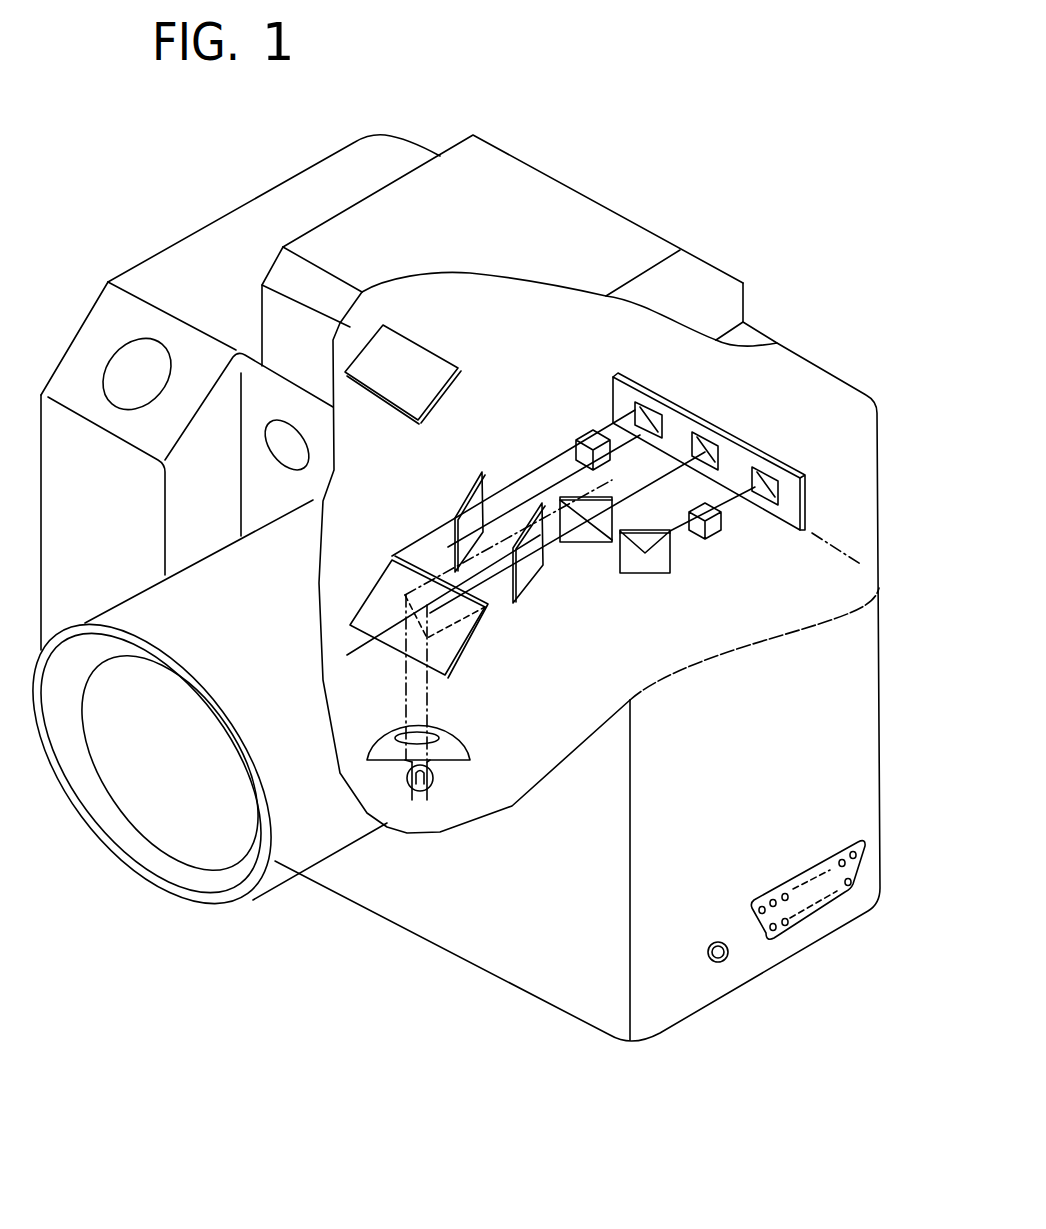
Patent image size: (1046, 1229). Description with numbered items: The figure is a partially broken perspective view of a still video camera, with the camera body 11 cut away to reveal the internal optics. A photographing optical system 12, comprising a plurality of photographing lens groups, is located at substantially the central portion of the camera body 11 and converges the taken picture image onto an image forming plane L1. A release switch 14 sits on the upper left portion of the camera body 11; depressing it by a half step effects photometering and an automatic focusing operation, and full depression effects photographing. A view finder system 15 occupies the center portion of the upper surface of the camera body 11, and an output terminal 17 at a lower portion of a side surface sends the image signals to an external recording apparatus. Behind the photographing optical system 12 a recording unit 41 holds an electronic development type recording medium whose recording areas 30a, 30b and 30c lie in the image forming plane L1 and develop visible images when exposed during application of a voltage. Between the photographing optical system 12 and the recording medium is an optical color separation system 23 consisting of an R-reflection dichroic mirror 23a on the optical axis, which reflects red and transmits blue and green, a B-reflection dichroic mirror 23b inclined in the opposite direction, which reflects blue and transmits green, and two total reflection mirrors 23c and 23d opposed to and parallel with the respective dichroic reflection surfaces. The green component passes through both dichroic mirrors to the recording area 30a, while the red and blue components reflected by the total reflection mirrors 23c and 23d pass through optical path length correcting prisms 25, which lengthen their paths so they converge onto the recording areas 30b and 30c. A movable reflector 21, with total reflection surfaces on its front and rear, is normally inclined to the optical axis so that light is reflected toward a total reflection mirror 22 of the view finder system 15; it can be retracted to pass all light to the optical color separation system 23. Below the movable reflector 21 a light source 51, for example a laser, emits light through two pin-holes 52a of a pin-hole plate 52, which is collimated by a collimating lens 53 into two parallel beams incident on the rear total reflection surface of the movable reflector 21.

The camera body 11 is at (488, 978).
The photographing optical system 12 is at (195, 843).
The release switch 14 is at (127, 373).
The view finder system 15 is at (425, 182).
The output terminal 17 is at (842, 895).
The movable reflector 21 is at (372, 592).
The total reflection mirror 22 is at (418, 353).
The optical color separation system 23 is at (608, 612).
The R-reflection dichroic mirror 23a is at (530, 567).
The B-reflection dichroic mirror 23b is at (580, 500).
The total reflection mirror 23c is at (455, 518).
The total reflection mirror 23d is at (650, 563).
The optical path length correcting prism 25 is at (593, 430).
The recording area 30a is at (717, 450).
The recording area 30b is at (648, 420).
The recording area 30c is at (778, 470).
The recording unit 41 is at (703, 413).
The light source 51 is at (452, 788).
The pin-hole plate 52 is at (470, 762).
The pin-hole 52a is at (405, 760).
The collimating lens 53 is at (408, 734).
The image forming plane L1 is at (835, 548).